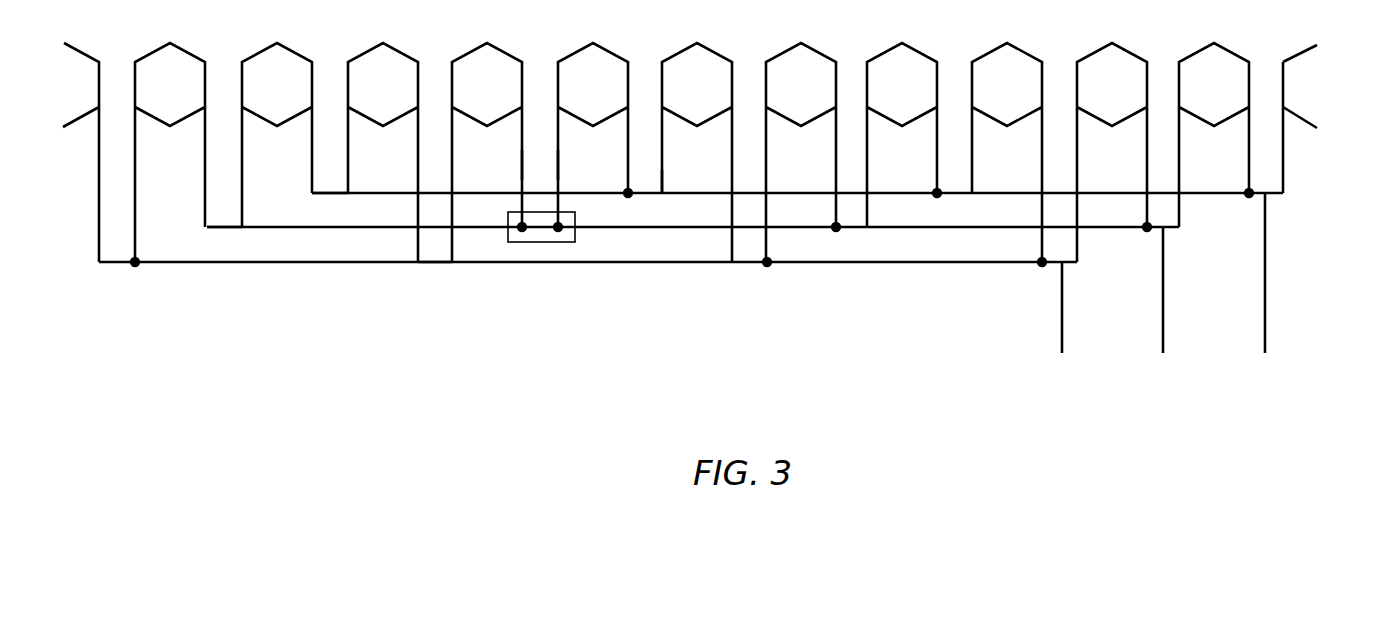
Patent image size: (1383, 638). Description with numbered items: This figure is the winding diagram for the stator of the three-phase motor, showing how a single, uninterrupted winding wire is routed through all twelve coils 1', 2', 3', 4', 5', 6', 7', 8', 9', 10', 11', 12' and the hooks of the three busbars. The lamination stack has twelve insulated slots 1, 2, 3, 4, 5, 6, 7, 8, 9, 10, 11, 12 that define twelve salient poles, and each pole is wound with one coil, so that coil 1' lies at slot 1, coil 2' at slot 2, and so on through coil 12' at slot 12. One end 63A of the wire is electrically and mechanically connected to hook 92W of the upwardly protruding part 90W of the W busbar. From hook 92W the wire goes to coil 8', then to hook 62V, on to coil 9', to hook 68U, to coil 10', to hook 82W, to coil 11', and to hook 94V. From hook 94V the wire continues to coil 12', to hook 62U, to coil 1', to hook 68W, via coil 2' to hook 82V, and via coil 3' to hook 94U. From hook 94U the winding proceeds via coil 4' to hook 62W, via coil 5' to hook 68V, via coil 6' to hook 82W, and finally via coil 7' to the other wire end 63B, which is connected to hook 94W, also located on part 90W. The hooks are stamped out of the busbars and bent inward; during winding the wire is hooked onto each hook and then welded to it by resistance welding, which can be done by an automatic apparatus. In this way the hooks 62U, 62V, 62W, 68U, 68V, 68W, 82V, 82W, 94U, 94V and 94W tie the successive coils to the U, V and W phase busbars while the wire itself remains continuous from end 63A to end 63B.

The slot 1 is at (1265, 91).
The slot 2 is at (1163, 91).
The slot 3 is at (1059, 91).
The slot 4 is at (954, 91).
The slot 5 is at (851, 91).
The slot 6 is at (748, 91).
The slot 7 is at (644, 91).
The slot 8 is at (539, 91).
The slot 9 is at (433, 91).
The slot 10 is at (329, 91).
The slot 11 is at (224, 91).
The slot 12 is at (117, 91).
The coil 1' is at (1214, 135).
The coil 2' is at (1112, 152).
The coil 3' is at (1007, 152).
The coil 4' is at (902, 135).
The coil 5' is at (801, 152).
The coil 6' is at (697, 152).
The coil 7' is at (595, 135).
The coil 8' is at (487, 152).
The coil 9' is at (383, 152).
The coil 10' is at (277, 135).
The coil 11' is at (170, 152).
The coil 12' is at (695, 152).
The hook 62U is at (1249, 195).
The hook 62V is at (452, 262).
The hook 62W is at (835, 230).
The wire end 63A is at (521, 166).
The wire end 63B is at (559, 166).
The hook 68U is at (352, 193).
The hook 68V is at (767, 263).
The hook 68W is at (1147, 229).
The hook 82V is at (1042, 263).
The hook 82W is at (245, 227).
The upwardly protruding portion 90W is at (541, 235).
The hook 92W is at (523, 243).
The hook 94U is at (936, 192).
The hook 94V is at (135, 263).
The hook 94W is at (558, 243).